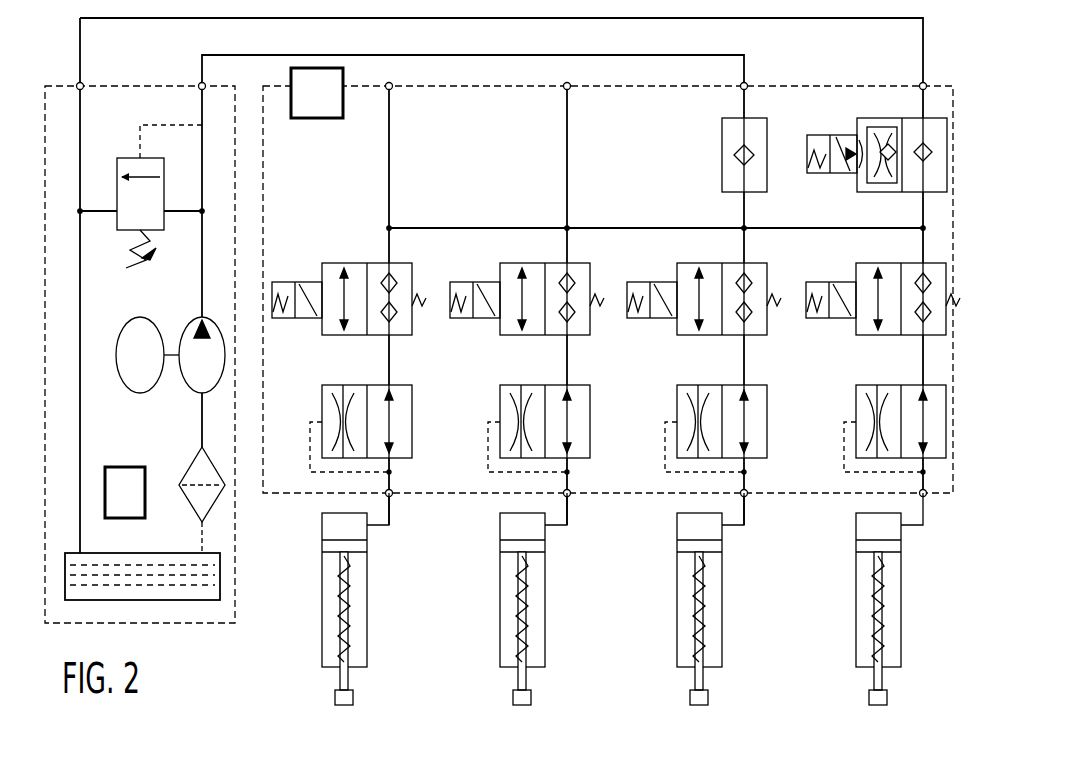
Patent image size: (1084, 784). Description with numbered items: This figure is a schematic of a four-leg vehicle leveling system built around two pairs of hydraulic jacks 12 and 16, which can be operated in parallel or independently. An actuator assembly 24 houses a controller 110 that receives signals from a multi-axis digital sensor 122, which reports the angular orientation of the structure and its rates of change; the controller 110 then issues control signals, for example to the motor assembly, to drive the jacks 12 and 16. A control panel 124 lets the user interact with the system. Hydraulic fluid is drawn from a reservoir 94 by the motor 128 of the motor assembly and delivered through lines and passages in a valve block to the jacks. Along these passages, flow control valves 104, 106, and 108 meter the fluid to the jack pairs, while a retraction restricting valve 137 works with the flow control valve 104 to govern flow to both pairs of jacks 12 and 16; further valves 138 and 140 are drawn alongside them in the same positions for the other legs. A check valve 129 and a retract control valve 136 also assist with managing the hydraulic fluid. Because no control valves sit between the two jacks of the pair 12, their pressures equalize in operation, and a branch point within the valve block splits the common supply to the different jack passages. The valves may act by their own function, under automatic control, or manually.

The actuator assembly 24 is at (140, 82).
The multi-axis digital sensor 122 is at (203, 240).
The control panel 124 is at (212, 318).
The motor 128 is at (140, 394).
The controller 110 is at (125, 492).
The reservoir 94 is at (221, 583).
The flow control valve 104 is at (356, 250).
The flow control valve 106 is at (711, 258).
The flow control valve 108 is at (885, 257).
The check valve 129 is at (722, 155).
The retract control valve 136 is at (845, 187).
The retraction restricting valve 137 is at (598, 384).
The flow control valve 138 is at (776, 383).
The flow control valve 140 is at (852, 372).
The pair of jacks 12 is at (380, 626).
The pair of jacks 16 is at (667, 622).